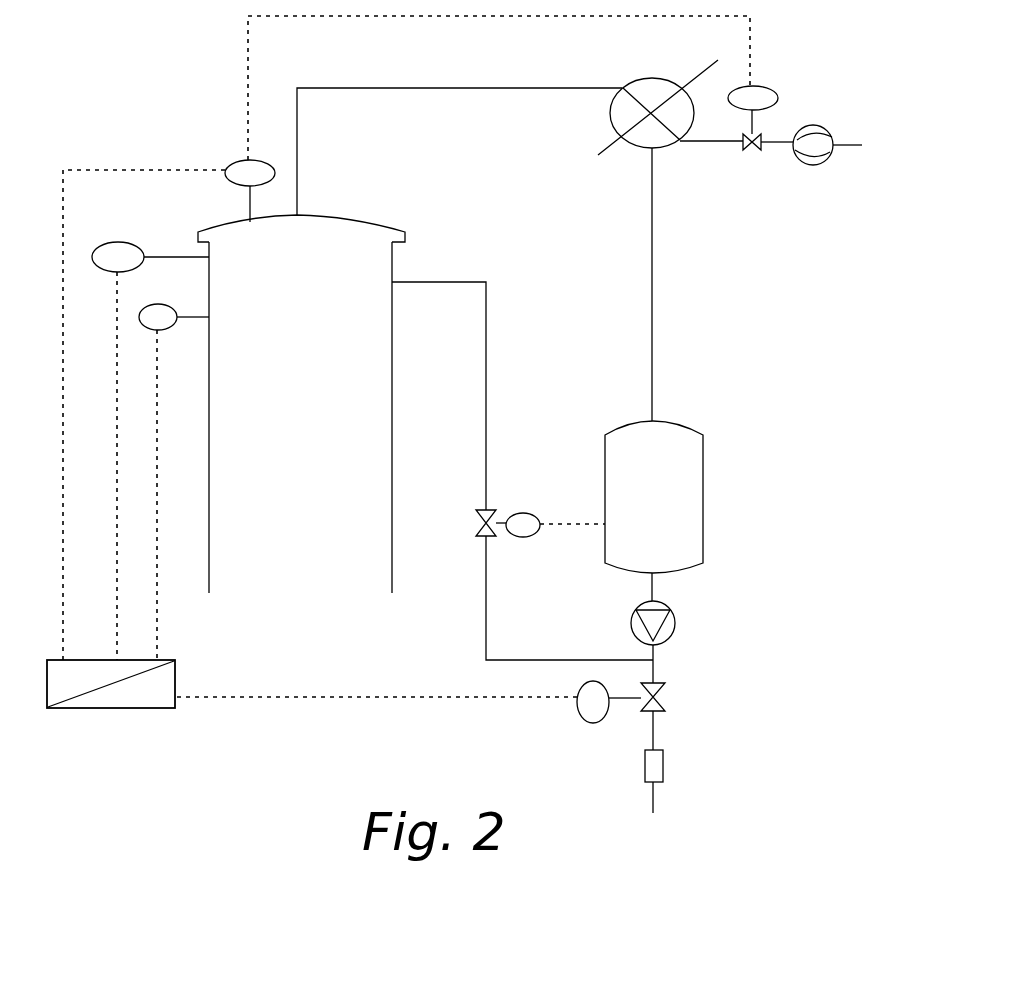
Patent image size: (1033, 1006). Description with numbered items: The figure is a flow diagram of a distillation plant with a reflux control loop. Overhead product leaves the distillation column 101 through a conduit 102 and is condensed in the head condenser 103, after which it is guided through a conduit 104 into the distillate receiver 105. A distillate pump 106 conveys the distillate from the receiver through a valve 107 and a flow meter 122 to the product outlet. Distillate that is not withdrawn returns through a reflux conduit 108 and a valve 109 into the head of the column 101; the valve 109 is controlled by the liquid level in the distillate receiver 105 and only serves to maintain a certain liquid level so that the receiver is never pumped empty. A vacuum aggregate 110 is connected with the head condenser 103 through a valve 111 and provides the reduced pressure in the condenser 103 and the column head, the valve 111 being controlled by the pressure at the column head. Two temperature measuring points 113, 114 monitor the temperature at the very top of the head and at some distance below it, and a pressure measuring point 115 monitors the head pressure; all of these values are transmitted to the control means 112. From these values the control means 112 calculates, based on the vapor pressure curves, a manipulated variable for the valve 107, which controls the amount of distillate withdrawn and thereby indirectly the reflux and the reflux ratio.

The distillation column 101 is at (348, 432).
The conduit 102 is at (430, 90).
The condenser 103 is at (620, 117).
The conduit 104 is at (662, 291).
The distillate receiver 105 is at (690, 424).
The distillate pump 106 is at (688, 613).
The valve 107 is at (661, 690).
The reflux conduit 108 is at (535, 640).
The valve 109 is at (480, 515).
The vacuum aggregate 110 is at (790, 156).
The valve 111 is at (750, 155).
The control means 112 is at (165, 683).
The temperature measuring point 113 is at (120, 242).
The temperature measuring point 114 is at (147, 307).
The pressure measuring point 115 is at (236, 163).
The flow meter 122 is at (665, 766).